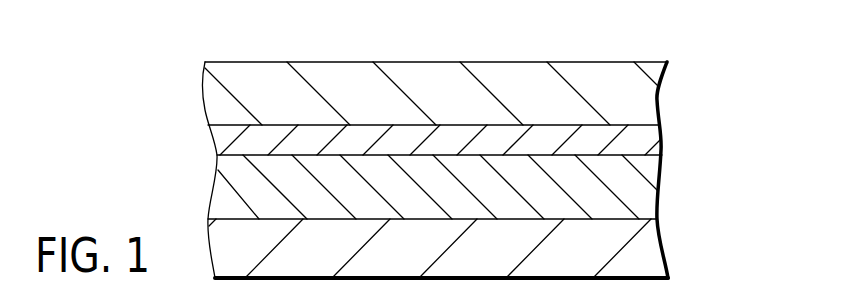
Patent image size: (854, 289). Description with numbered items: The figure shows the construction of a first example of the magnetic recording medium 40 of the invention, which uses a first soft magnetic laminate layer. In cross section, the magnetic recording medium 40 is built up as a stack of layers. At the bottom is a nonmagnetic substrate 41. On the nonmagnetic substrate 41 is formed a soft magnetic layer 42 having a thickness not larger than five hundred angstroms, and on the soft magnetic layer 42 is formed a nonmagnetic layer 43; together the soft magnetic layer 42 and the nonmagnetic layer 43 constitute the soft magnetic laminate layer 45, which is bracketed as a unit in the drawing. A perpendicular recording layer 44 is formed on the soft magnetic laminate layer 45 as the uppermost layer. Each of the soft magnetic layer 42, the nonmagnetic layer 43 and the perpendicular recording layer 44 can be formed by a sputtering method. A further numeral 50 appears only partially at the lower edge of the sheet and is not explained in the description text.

The magnetic recording medium 40 is at (486, 139).
The nonmagnetic substrate 41 is at (642, 250).
The soft magnetic layer 42 is at (463, 187).
The nonmagnetic layer 43 is at (642, 137).
The perpendicular recording layer 44 is at (642, 99).
The soft magnetic laminate layer 45 is at (489, 169).
The underlying body (partially shown) 50 is at (759, 285).